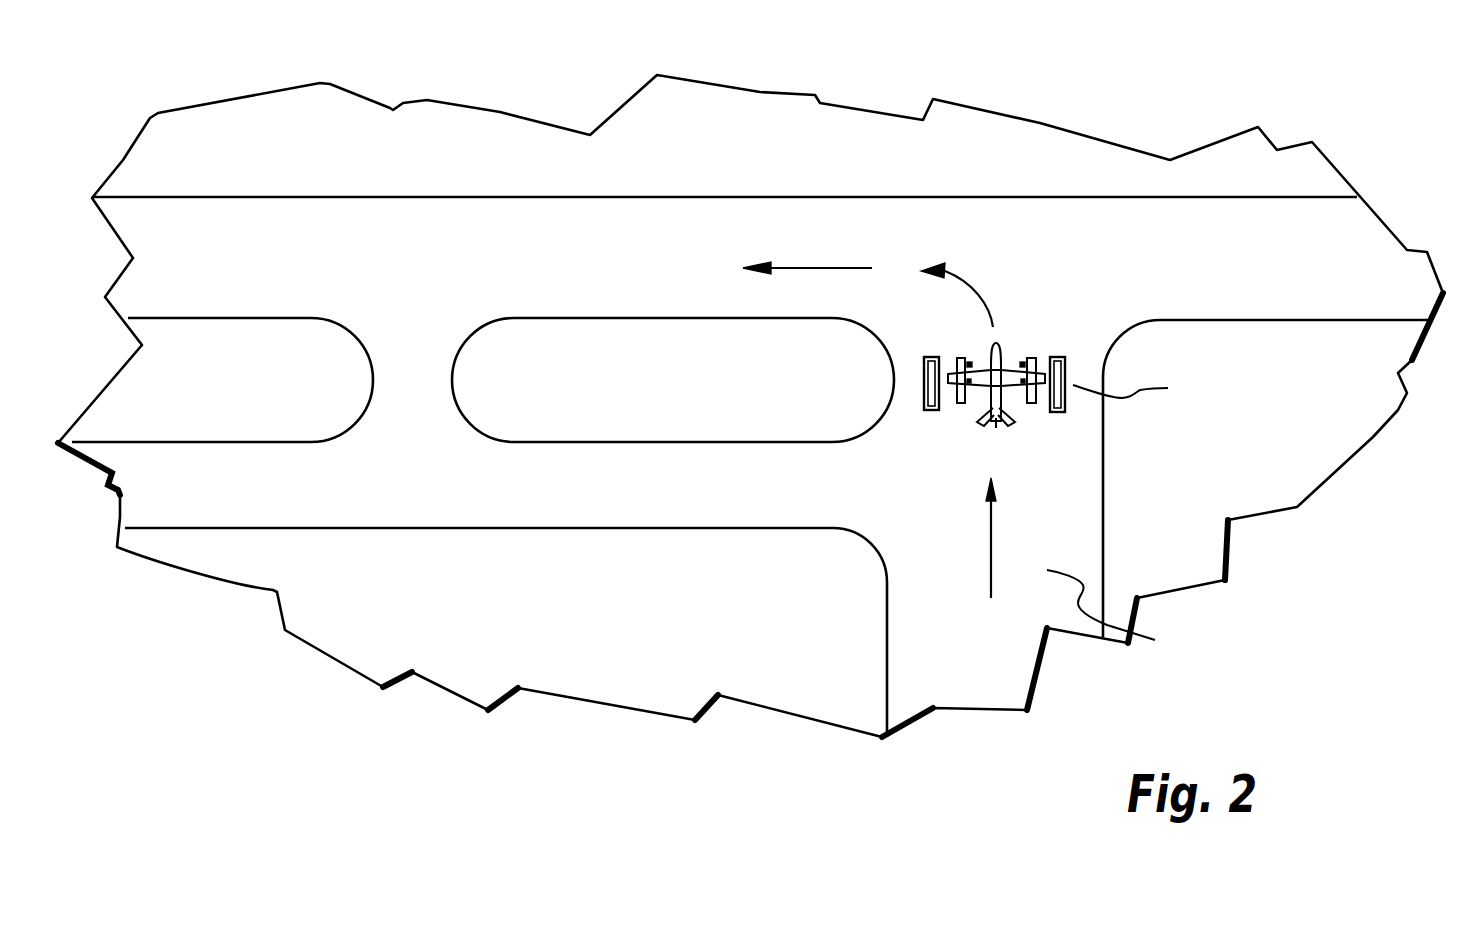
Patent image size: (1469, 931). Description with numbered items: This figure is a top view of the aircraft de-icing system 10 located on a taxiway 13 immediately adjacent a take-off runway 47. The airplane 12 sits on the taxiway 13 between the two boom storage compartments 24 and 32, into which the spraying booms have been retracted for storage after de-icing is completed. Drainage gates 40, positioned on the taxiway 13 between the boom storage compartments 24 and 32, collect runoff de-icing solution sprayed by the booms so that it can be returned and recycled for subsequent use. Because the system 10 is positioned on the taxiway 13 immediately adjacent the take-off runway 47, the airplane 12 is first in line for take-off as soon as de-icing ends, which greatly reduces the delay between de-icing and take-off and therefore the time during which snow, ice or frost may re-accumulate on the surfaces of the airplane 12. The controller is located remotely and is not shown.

The take-off runway 47 is at (1063, 230).
The taxiway 13 is at (1047, 500).
The airplane 12 is at (969, 357).
The drainage gates 40 is at (961, 358).
The boom storage compartment 32 is at (931, 412).
The boom storage compartment 24 is at (1057, 355).
The aircraft de-icing system 10 is at (992, 427).